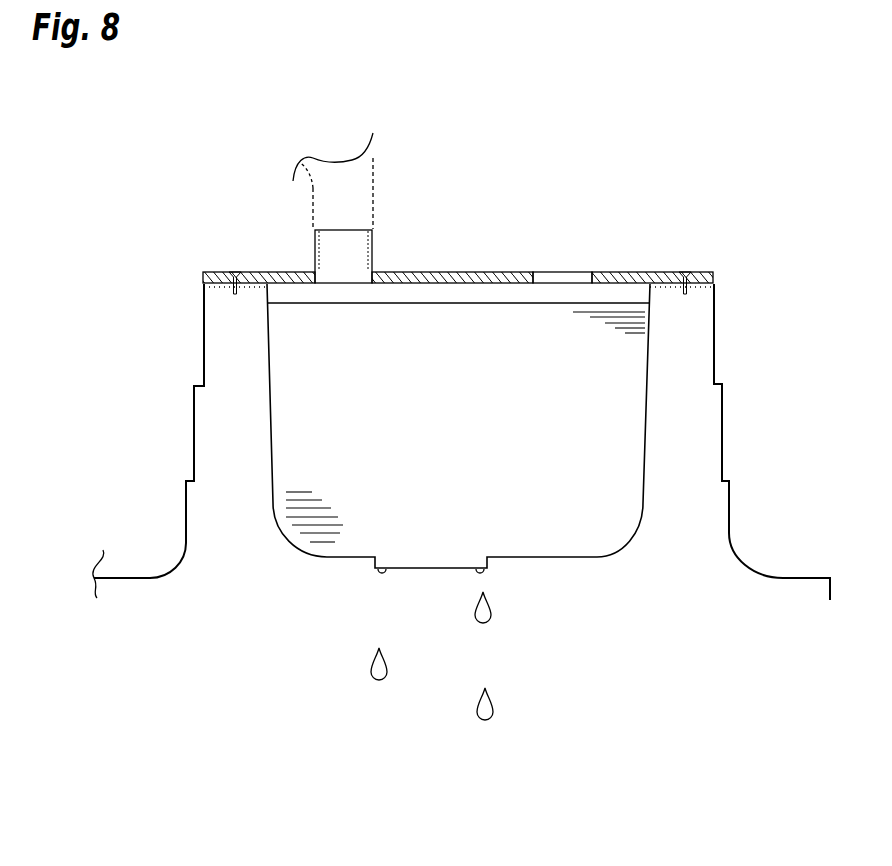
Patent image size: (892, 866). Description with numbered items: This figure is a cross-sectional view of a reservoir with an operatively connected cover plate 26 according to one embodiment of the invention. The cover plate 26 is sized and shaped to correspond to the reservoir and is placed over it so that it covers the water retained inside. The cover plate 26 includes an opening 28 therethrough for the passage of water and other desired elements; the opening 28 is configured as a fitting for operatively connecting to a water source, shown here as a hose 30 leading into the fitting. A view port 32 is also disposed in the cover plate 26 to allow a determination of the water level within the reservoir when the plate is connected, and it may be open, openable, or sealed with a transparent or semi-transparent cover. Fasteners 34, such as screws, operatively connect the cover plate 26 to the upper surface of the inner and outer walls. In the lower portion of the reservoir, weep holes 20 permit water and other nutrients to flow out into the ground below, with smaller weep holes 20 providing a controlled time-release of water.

The weep hole 20 is at (375, 573).
The cover plate 26 is at (441, 272).
The opening 28 is at (315, 265).
The hose 30 is at (315, 207).
The view port 32 is at (577, 273).
The fastener 34 is at (237, 292).